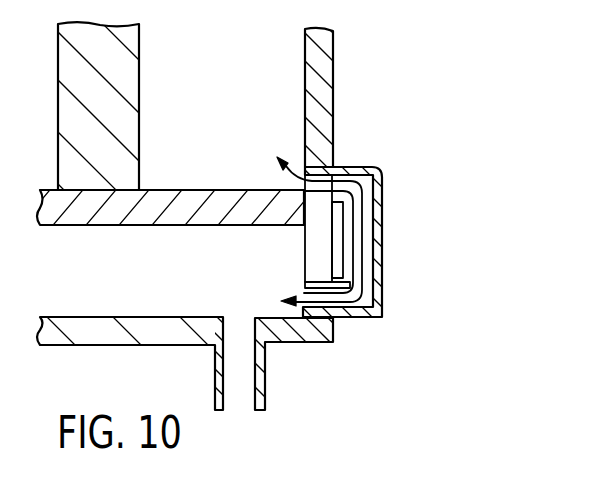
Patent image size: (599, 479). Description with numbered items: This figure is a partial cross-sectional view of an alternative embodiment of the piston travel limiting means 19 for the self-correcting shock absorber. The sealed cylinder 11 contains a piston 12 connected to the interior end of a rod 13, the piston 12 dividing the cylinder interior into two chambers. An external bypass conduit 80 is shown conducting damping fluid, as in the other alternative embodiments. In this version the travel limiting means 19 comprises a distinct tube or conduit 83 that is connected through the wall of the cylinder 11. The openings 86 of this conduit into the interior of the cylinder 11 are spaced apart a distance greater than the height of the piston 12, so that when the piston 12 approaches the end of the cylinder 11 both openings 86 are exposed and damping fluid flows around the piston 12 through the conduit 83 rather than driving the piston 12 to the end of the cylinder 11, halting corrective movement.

The sealed cylinder 11 is at (333, 33).
The piston 12 is at (192, 189).
The rod 13 is at (140, 74).
The piston travel limiting means 19 is at (346, 237).
The external bypass conduit 80 is at (215, 372).
The tube or conduit 83 is at (384, 213).
The openings 86 is at (305, 178).